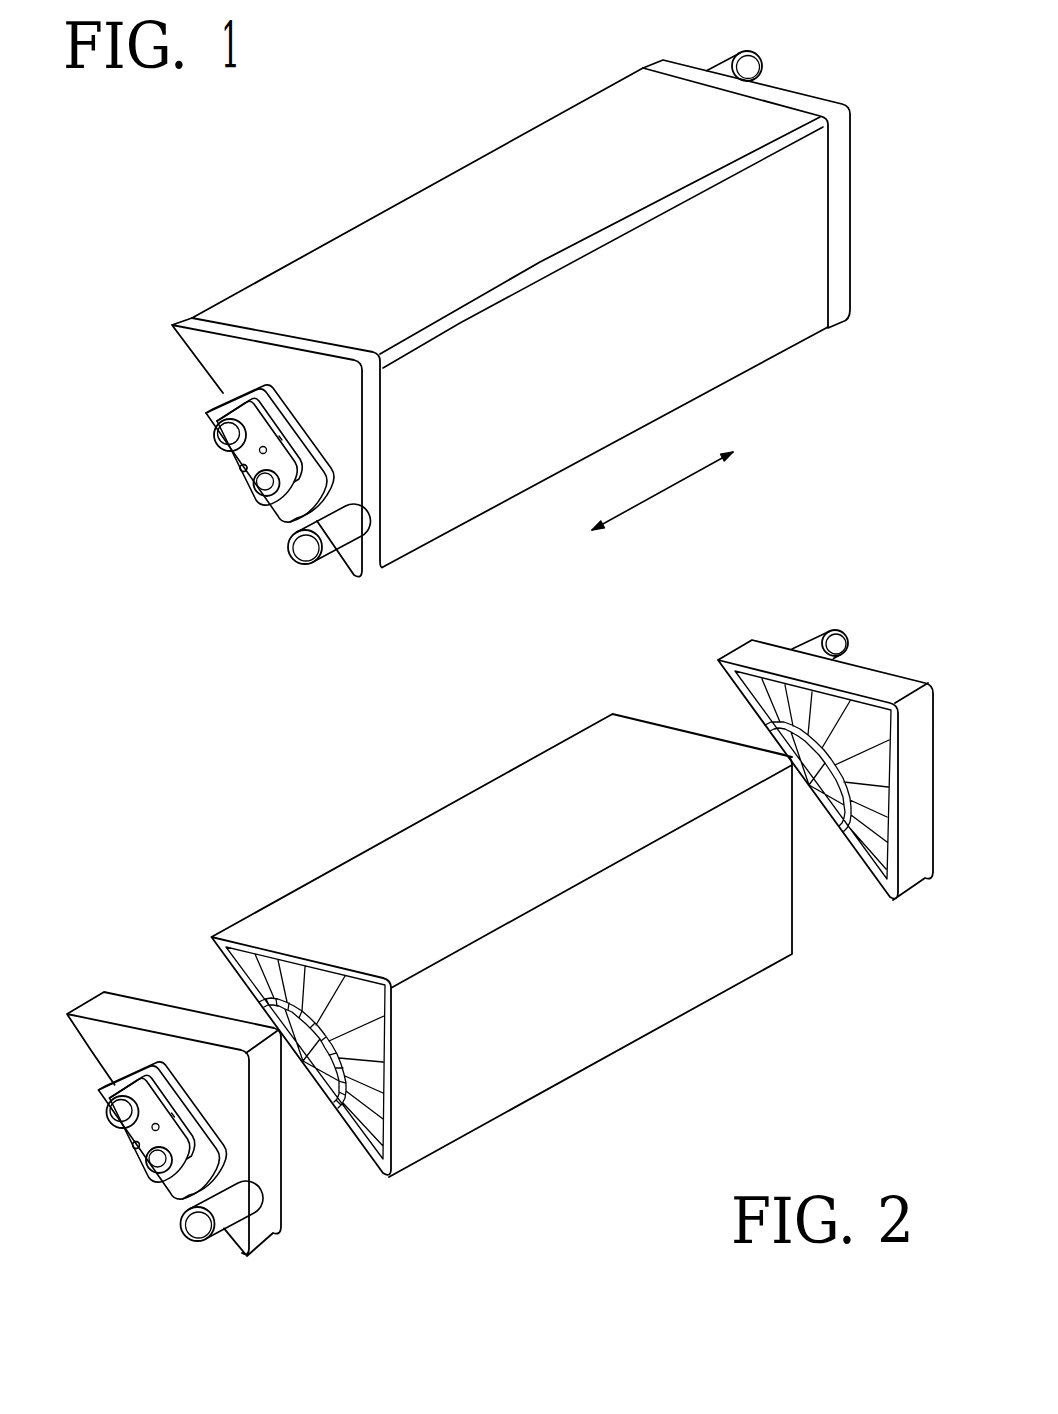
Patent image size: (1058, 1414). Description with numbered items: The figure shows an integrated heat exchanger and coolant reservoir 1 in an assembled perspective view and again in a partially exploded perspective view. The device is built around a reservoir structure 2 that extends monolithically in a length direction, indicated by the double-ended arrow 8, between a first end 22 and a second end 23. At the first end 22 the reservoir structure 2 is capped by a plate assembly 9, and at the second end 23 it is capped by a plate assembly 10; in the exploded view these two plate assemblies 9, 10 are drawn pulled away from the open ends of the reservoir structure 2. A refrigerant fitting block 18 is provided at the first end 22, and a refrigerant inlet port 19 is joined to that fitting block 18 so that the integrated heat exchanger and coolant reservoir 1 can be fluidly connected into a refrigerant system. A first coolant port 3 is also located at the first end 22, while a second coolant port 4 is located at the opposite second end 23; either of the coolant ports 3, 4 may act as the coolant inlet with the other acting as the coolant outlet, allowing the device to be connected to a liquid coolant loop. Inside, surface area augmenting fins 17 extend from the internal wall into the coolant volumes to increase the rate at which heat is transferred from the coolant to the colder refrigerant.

In FIG. 1, the integrated heat exchanger and coolant reservoir 1 is at (370, 183).
In FIG. 2, the integrated heat exchanger and coolant reservoir 1 is at (960, 932).
In FIG. 2, the reservoir structure 2 is at (392, 845).
In FIG. 1, the first coolant port 3 is at (291, 561).
In FIG. 2, the first coolant port 3 is at (222, 1235).
In FIG. 1, the second coolant port 4 is at (742, 51).
In FIG. 2, the second coolant port 4 is at (836, 632).
In FIG. 1, the double-ended arrow 8 is at (657, 495).
In FIG. 2, the plate assembly 9 is at (107, 1008).
In FIG. 2, the plate assembly 10 is at (867, 658).
In FIG. 1, the surface area augmenting fins 17 is at (214, 435).
In FIG. 2, the surface area augmenting fins 17 is at (89, 1118).
In FIG. 1, the refrigerant fitting block 18 is at (240, 468).
In FIG. 2, the refrigerant fitting block 18 is at (102, 1187).
In FIG. 1, the refrigerant inlet port 19 is at (262, 496).
In FIG. 2, the refrigerant inlet port 19 is at (140, 1187).
In FIG. 1, the end 22 is at (360, 588).
In FIG. 1, the end 23 is at (862, 318).